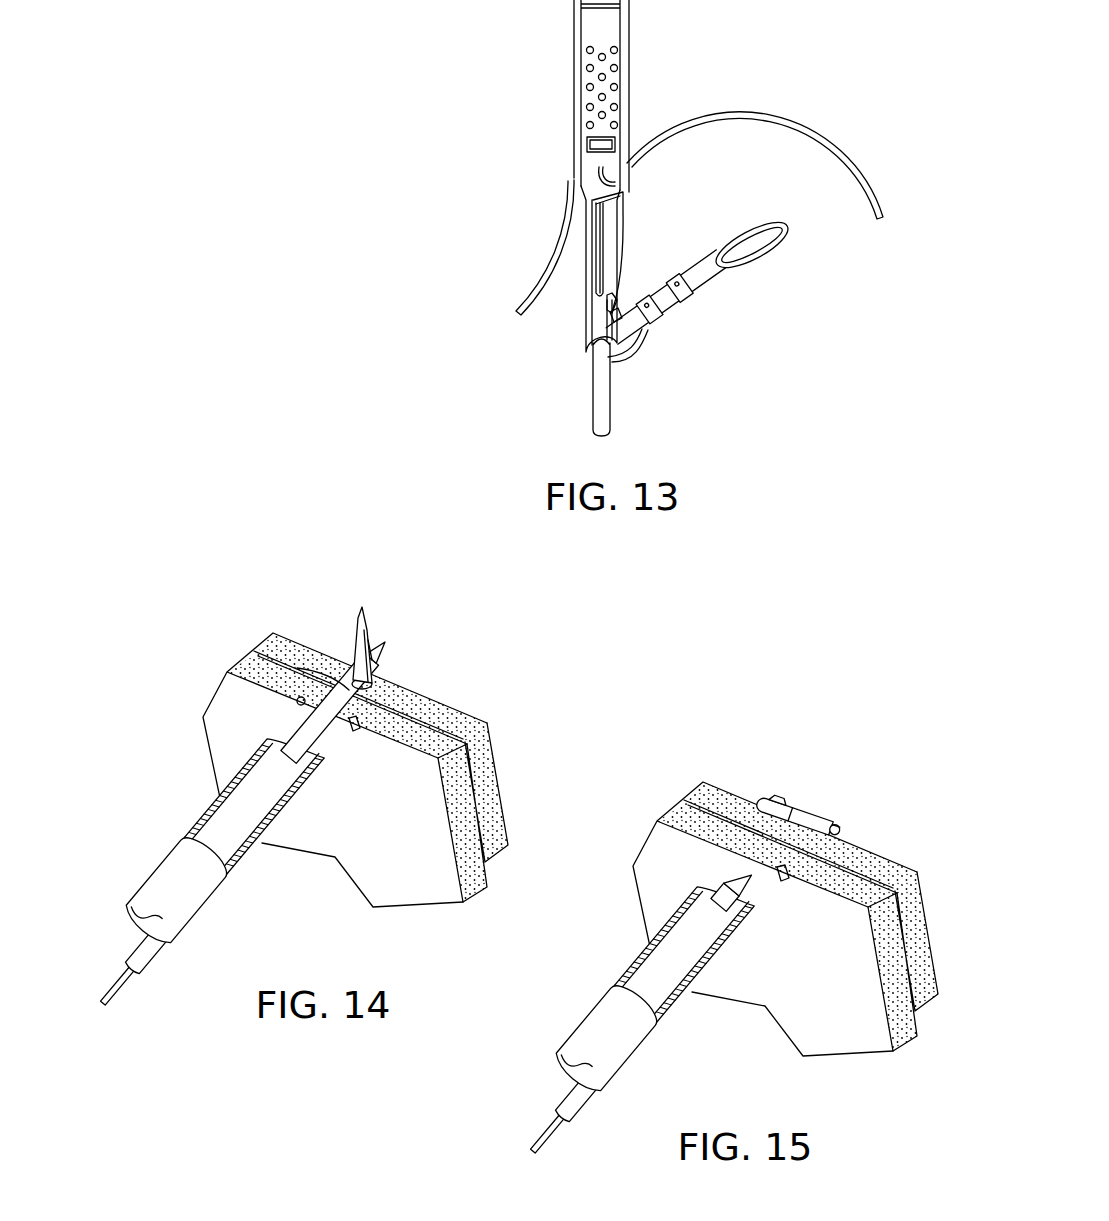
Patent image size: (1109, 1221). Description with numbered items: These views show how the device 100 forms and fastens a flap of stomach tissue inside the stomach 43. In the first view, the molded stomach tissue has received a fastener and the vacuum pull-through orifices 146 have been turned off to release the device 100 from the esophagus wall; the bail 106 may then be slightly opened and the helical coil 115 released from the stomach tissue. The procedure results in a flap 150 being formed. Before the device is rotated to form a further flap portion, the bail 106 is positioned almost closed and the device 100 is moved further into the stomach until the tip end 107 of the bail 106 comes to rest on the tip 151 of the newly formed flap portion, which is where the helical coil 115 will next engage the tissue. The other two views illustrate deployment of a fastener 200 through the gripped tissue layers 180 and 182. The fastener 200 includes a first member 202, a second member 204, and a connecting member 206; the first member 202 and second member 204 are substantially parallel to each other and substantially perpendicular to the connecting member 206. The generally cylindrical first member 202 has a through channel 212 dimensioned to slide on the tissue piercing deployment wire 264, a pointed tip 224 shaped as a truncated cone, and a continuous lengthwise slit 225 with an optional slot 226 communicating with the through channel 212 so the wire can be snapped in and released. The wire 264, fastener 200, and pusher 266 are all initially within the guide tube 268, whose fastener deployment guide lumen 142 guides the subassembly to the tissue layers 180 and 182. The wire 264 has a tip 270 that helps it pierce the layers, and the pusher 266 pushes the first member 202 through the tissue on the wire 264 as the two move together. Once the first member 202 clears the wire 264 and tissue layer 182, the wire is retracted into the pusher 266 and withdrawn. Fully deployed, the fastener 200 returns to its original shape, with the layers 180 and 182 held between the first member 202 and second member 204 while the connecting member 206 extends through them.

In FIG. 13, the stomach 43 is at (757, 115).
In FIG. 13, the device 100 is at (577, 313).
In FIG. 13, the bail 106 is at (675, 313).
In FIG. 13, the tip end of bail 107 is at (770, 227).
In FIG. 13, the helical coil 115 is at (613, 305).
In FIG. 14, the fastener deployment guide lumen 142 is at (223, 812).
In FIG. 15, the fastener deployment guide lumen 142 is at (650, 960).
In FIG. 13, the orifices 146 is at (580, 103).
In FIG. 13, the flap 150 is at (620, 217).
In FIG. 13, the tip of flap portion 151 is at (621, 312).
In FIG. 14, the tissue layer 180 is at (423, 693).
In FIG. 15, the tissue layer 180 is at (677, 813).
In FIG. 14, the tissue layer 182 is at (464, 720).
In FIG. 15, the tissue layer 182 is at (703, 787).
In FIG. 14, the fastener 200 is at (292, 574).
In FIG. 15, the fastener 200 is at (870, 770).
In FIG. 14, the first member 202 is at (350, 652).
In FIG. 15, the first member 202 is at (770, 810).
In FIG. 14, the second member 204 is at (298, 703).
In FIG. 15, the second member 204 is at (773, 867).
In FIG. 14, the connecting member 206 is at (256, 653).
In FIG. 15, the connecting member 206 is at (757, 803).
In FIG. 15, the through channel 212 is at (837, 832).
In FIG. 14, the pointed tip 224 is at (358, 612).
In FIG. 15, the pointed tip 224 is at (770, 795).
In FIG. 14, the lengthwise slit 225 is at (367, 619).
In FIG. 14, the slot 226 is at (373, 645).
In FIG. 15, the slot 226 is at (803, 817).
In FIG. 14, the tissue piercing deployment wire 264 is at (118, 980).
In FIG. 15, the tissue piercing deployment wire 264 is at (548, 1137).
In FIG. 14, the pusher 266 is at (145, 942).
In FIG. 15, the pusher 266 is at (575, 1098).
In FIG. 14, the guide tube 268 is at (176, 890).
In FIG. 15, the guide tube 268 is at (595, 1027).
In FIG. 14, the tip 270 is at (397, 653).
In FIG. 15, the tip 270 is at (712, 905).